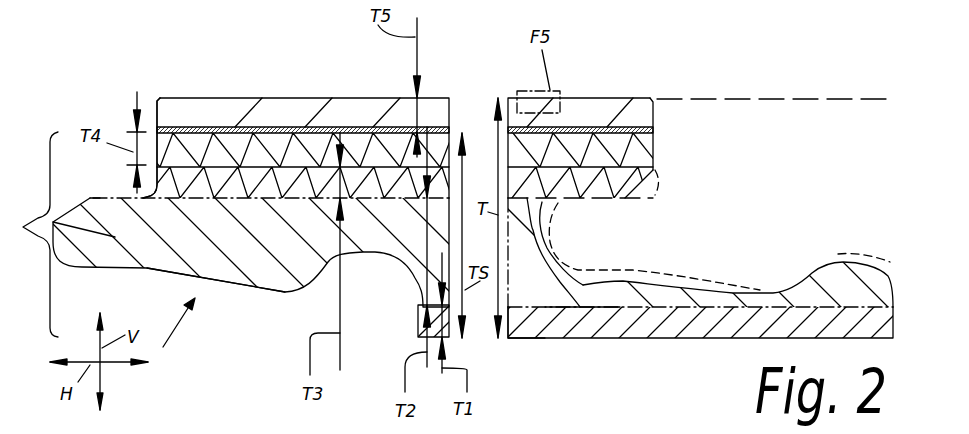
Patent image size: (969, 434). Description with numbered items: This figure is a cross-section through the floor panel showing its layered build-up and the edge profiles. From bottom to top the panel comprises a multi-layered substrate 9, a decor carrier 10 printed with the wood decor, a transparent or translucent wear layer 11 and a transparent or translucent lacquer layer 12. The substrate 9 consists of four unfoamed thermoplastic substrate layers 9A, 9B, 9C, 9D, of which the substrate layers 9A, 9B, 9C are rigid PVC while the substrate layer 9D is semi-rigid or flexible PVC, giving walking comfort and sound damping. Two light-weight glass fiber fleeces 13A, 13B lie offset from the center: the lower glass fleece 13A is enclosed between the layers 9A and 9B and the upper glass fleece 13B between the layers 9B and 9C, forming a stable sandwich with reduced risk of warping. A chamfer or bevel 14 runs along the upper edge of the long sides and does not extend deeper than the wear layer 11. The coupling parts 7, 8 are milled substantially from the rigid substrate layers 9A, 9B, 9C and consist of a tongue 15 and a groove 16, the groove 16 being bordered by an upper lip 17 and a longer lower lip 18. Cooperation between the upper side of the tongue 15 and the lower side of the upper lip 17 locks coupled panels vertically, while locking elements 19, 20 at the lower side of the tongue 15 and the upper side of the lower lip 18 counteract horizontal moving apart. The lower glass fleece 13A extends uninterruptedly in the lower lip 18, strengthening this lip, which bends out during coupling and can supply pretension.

The coupling part 7 is at (177, 327).
The coupling part 8 is at (692, 168).
The multi-layered substrate 9 is at (37, 213).
The substrate layer 9A is at (418, 312).
The substrate layer 9B is at (253, 260).
The substrate layer 9C is at (305, 182).
The substrate layer 9D is at (247, 147).
The decor carrier 10 is at (318, 129).
The wear layer 11 is at (357, 110).
The lacquer layer 12 is at (430, 93).
The lower glass fiber fleece 13A is at (510, 310).
The upper glass fiber fleece 13B is at (585, 317).
The chamfer or bevel 14 is at (160, 100).
The tongue 15 is at (115, 237).
The groove 16 is at (673, 233).
The upper lip 17 is at (598, 115).
The lower lip 18 is at (665, 322).
The locking element 19 is at (287, 285).
The locking element 20 is at (830, 278).